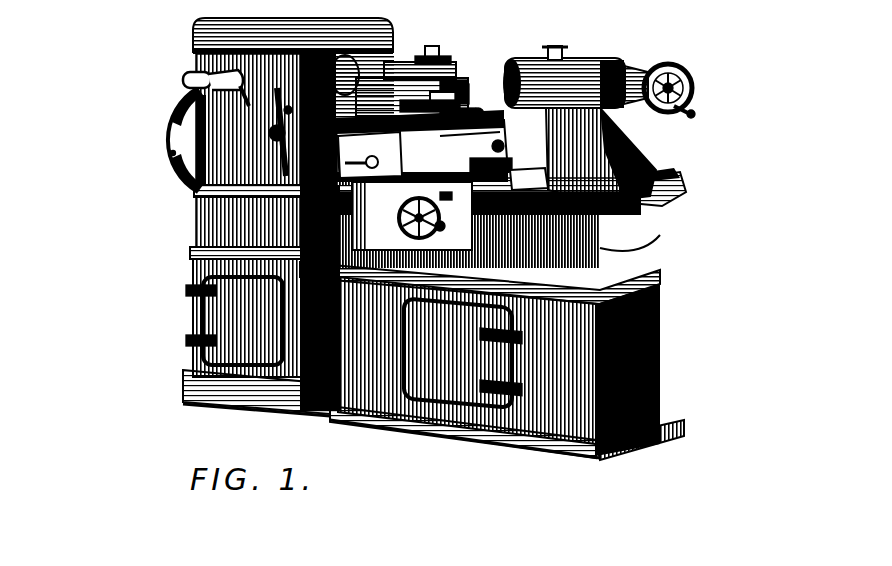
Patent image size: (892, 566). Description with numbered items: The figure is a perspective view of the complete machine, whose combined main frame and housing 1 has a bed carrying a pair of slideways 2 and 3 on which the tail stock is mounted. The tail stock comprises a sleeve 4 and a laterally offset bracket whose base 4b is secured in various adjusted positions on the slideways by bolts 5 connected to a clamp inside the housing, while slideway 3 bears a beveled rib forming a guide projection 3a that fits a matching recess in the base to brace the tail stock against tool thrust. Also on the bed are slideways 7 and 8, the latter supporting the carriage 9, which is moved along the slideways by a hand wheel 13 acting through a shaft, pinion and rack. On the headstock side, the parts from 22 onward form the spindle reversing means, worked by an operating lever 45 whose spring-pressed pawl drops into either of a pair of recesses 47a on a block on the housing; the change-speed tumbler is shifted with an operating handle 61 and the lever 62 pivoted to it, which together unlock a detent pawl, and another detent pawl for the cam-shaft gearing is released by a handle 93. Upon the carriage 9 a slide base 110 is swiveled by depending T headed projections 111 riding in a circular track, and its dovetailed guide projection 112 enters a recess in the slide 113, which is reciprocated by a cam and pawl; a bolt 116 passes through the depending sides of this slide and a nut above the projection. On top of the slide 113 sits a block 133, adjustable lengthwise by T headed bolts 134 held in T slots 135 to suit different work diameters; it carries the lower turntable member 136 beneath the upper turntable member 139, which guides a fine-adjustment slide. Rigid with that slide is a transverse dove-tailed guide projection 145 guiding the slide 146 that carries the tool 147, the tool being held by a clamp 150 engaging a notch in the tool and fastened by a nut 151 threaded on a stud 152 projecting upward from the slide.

The combined main frame and housing 1 is at (205, 217).
The slideway 2 is at (655, 212).
The slideway 3 is at (682, 192).
The guide projection 3a is at (676, 180).
The sleeve 4 is at (592, 68).
The base 4b is at (662, 245).
The bolts 5 is at (656, 146).
The slideway 7 is at (530, 180).
The slideway 8 is at (472, 220).
The carriage 9 is at (449, 204).
The hand wheel 13 is at (400, 212).
The reversing mechanism part 22 is at (170, 128).
The operating lever 45 is at (277, 148).
The recesses 47a is at (270, 132).
The operating handle 61 is at (186, 74).
The lever 62 is at (205, 86).
The handle 93 is at (171, 155).
The slide base 110 is at (500, 160).
The T headed projections 111 is at (505, 146).
The dovetailed guide projection 112 is at (370, 155).
The slide 113 is at (422, 146).
The bolt 116 is at (470, 113).
The block 133 is at (480, 136).
The T headed bolts 134 is at (475, 126).
The T slots 135 is at (412, 216).
The lower turntable member 136 is at (458, 104).
The upper turntable member 139 is at (399, 89).
The dove-tailed guide projection 145 is at (442, 92).
The slide 146 is at (446, 80).
The tool 147 is at (476, 96).
The clamp 150 is at (440, 66).
The nut 151 is at (424, 58).
The stud 152 is at (432, 56).